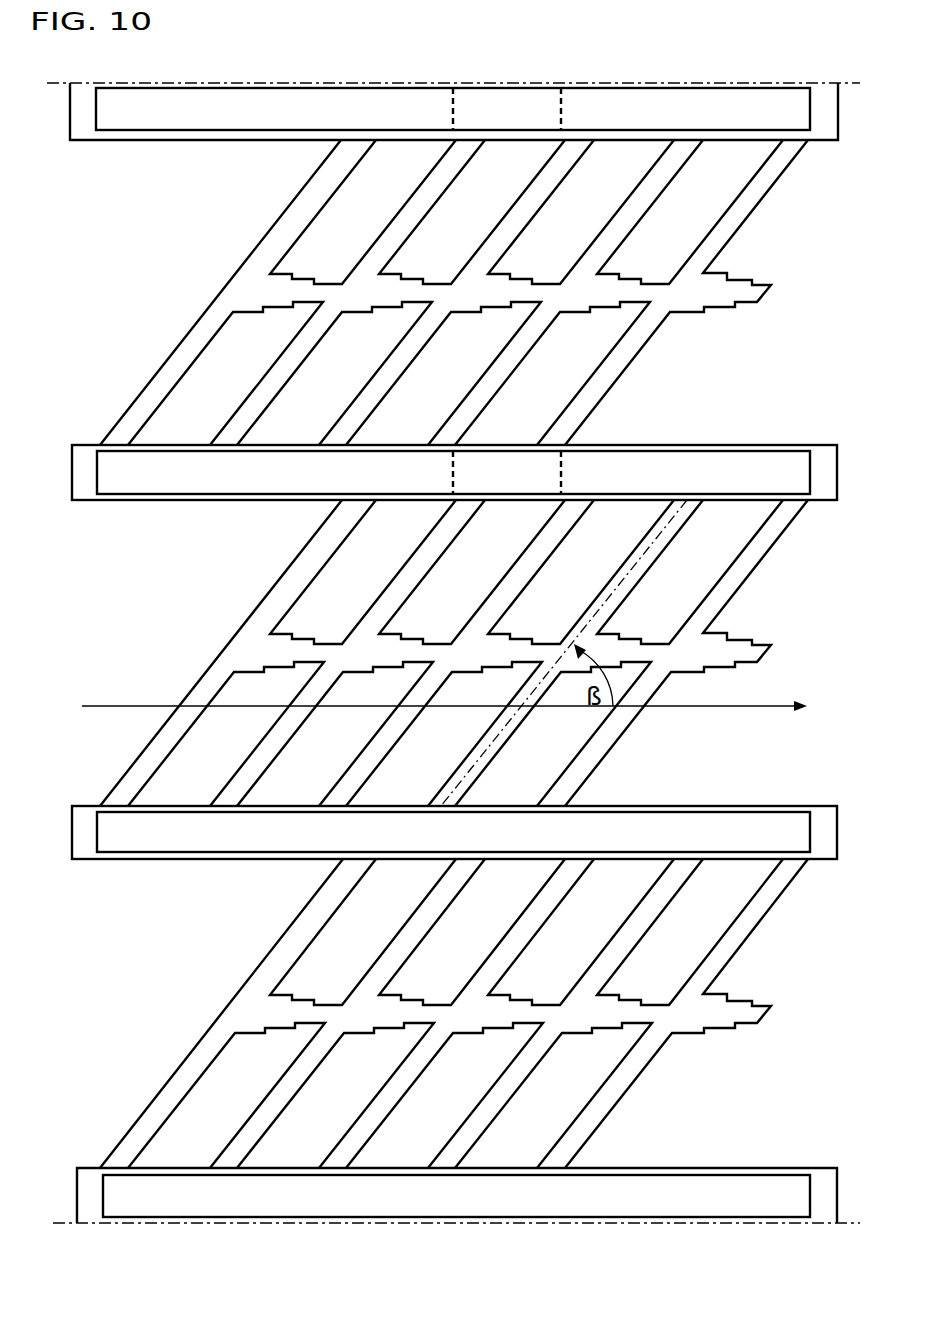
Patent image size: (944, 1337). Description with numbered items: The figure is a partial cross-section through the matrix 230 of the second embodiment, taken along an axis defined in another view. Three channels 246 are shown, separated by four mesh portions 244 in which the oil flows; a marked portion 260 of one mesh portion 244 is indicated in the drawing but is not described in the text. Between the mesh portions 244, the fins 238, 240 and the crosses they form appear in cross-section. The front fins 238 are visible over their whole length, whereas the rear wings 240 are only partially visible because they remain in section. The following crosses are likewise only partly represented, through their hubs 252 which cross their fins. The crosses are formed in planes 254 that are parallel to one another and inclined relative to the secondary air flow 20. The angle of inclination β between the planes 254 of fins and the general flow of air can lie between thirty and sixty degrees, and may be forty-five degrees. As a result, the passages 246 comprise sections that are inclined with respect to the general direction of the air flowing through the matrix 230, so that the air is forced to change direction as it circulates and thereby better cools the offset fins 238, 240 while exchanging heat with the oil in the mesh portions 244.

The secondary air flow 20 is at (426, 706).
The matrix 230 is at (128, 268).
The front fins 238 is at (290, 226).
The rear wings 240 is at (278, 274).
The mesh portions 244 is at (162, 125).
The channels 246 is at (692, 413).
The hubs 252 is at (650, 288).
The planes of fins 254 is at (660, 533).
The bus bar segment 260 is at (527, 125).